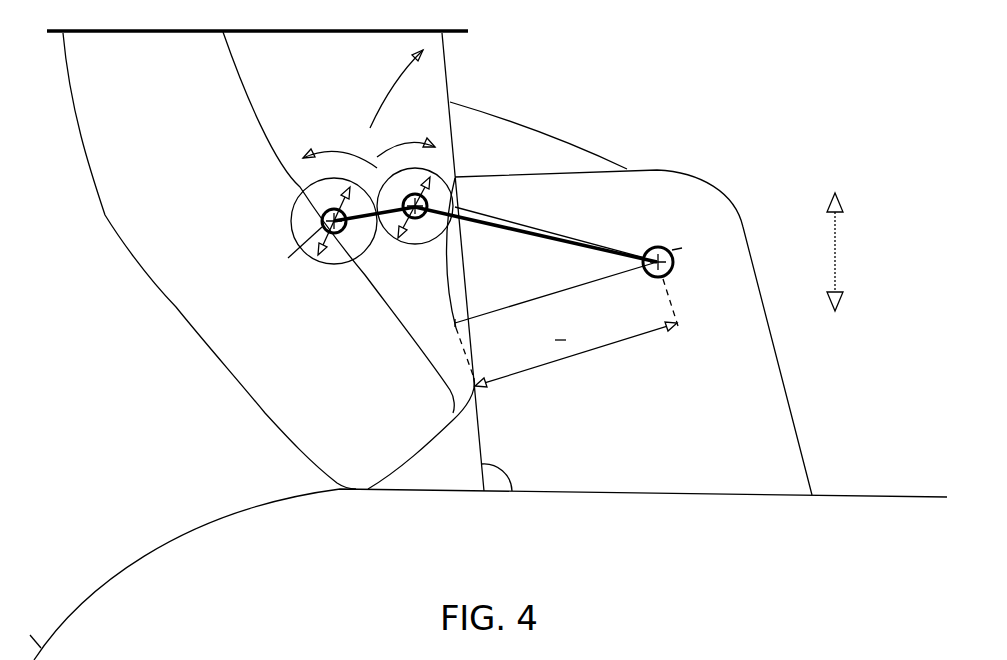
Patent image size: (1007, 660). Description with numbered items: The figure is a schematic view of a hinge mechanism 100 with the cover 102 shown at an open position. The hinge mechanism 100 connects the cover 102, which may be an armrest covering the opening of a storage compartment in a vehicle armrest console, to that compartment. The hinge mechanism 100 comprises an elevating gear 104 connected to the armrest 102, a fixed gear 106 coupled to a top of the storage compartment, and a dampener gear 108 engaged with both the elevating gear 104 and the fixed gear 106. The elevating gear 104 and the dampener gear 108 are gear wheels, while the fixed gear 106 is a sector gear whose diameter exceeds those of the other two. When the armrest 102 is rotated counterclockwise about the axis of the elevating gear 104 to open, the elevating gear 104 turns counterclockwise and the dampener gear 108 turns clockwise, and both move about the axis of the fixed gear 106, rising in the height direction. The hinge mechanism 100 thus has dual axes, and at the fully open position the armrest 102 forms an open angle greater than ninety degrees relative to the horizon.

The hinge mechanism 100 is at (496, 189).
The cover 102 is at (118, 211).
The elevating gear 104 is at (300, 226).
The fixed gear 106 is at (548, 250).
The dampener gear 108 is at (423, 238).